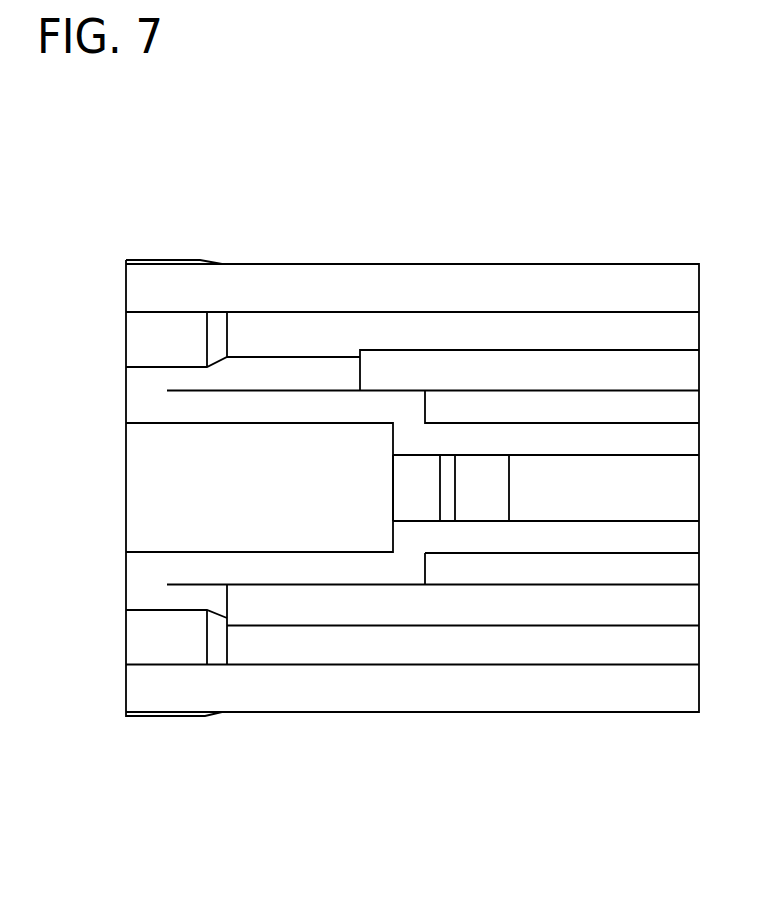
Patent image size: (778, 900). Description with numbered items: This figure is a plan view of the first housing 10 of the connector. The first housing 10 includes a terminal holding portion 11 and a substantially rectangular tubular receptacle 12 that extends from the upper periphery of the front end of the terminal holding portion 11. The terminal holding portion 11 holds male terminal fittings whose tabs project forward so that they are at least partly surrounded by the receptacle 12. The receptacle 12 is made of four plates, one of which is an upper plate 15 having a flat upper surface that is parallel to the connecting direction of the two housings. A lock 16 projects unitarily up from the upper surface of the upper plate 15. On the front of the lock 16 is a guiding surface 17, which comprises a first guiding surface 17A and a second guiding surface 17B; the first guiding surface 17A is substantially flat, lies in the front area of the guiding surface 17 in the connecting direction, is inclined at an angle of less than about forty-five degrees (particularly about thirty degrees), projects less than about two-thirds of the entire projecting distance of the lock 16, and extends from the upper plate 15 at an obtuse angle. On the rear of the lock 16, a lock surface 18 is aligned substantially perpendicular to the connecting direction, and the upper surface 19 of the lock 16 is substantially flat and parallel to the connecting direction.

The first housing 10 is at (380, 471).
The terminal holding portion 11 is at (227, 487).
The receptacle 12 is at (412, 723).
The upper plate 15 is at (433, 659).
The lock 16 is at (411, 361).
The guiding surface 17 is at (569, 342).
The first guiding surface 17A is at (515, 363).
The second guiding surface 17B is at (474, 363).
The lock surface 18 is at (347, 362).
The upper surface 19 is at (416, 488).